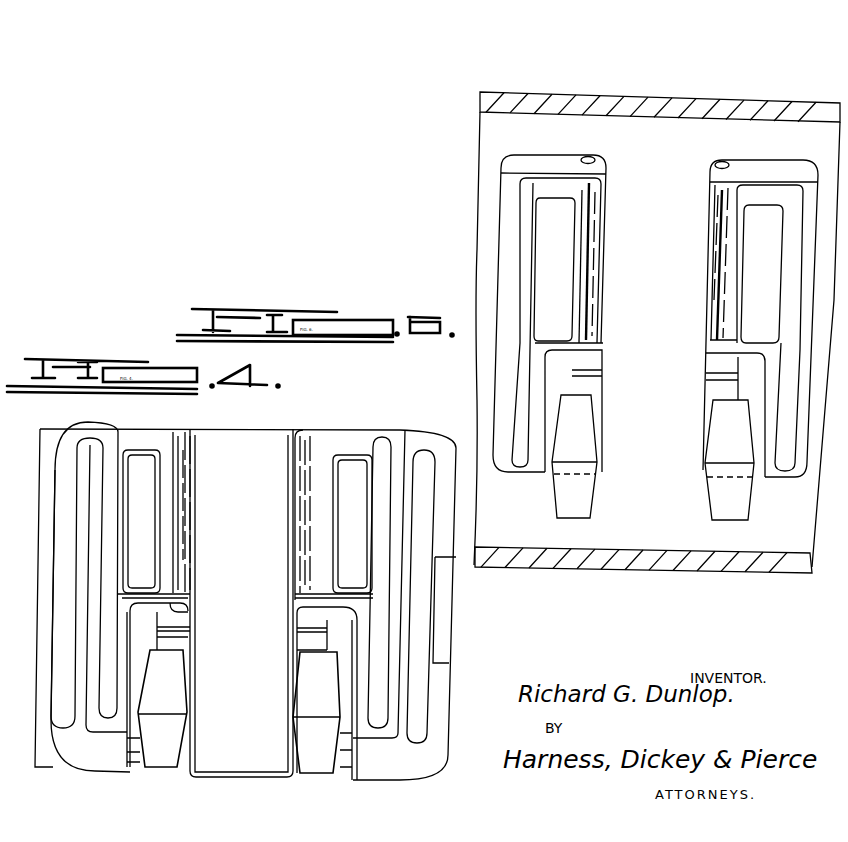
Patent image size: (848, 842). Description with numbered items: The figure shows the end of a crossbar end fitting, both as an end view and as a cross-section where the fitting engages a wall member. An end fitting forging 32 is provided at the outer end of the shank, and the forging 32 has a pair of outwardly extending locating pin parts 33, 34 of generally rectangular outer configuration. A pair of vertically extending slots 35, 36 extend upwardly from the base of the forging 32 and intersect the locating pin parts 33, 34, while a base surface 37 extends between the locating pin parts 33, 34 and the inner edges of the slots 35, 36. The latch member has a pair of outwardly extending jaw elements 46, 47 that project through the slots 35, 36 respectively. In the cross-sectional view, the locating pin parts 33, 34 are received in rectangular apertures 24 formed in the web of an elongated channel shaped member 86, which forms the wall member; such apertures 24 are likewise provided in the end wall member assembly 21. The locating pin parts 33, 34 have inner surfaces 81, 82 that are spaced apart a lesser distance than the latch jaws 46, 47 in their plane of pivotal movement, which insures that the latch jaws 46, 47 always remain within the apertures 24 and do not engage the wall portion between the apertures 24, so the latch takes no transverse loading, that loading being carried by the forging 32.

In FIG. 6, the end wall member assembly 21 is at (557, 90).
In FIG. 6, the channel shaped member 86 is at (698, 104).
In FIG. 6, the rectangular apertures 24 is at (717, 163).
In FIG. 6, the end fitting forging 32 is at (580, 240).
In FIG. 4, the end fitting forging 32 is at (285, 427).
In FIG. 6, the locating pin part 33 is at (520, 214).
In FIG. 4, the locating pin part 33 is at (117, 433).
In FIG. 6, the locating pin part 34 is at (795, 207).
In FIG. 4, the locating pin part 34 is at (358, 438).
In FIG. 4, the slot 35 is at (180, 606).
In FIG. 4, the slot 36 is at (298, 613).
In FIG. 4, the base surface 37 is at (258, 494).
In FIG. 6, the jaw element 46 is at (577, 502).
In FIG. 4, the jaw element 46 is at (163, 730).
In FIG. 6, the jaw element 47 is at (718, 489).
In FIG. 4, the jaw element 47 is at (307, 683).
In FIG. 6, the inner surface 81 is at (598, 283).
In FIG. 4, the inner surface 81 is at (194, 513).
In FIG. 6, the inner surface 82 is at (712, 298).
In FIG. 4, the inner surface 82 is at (297, 532).